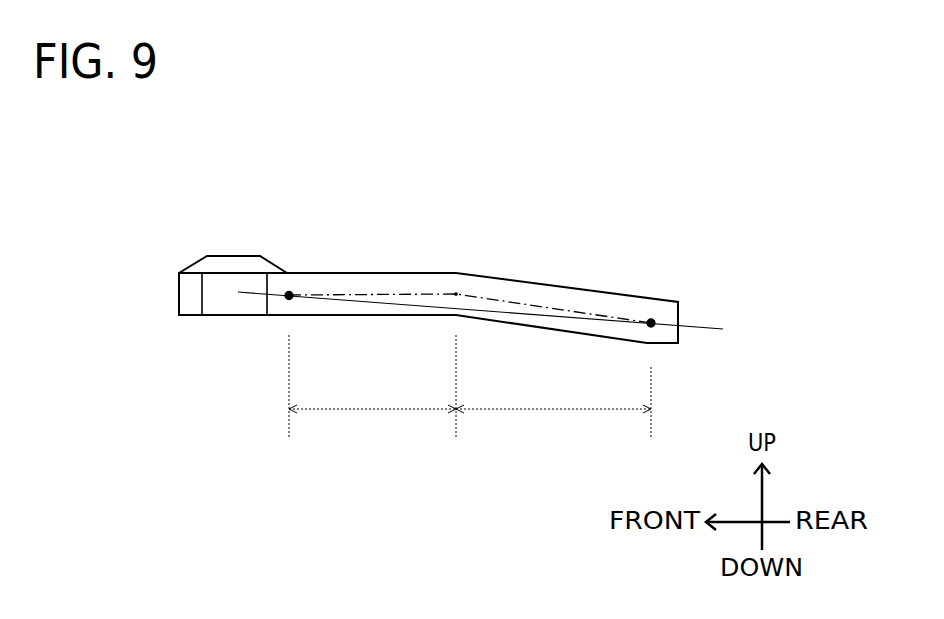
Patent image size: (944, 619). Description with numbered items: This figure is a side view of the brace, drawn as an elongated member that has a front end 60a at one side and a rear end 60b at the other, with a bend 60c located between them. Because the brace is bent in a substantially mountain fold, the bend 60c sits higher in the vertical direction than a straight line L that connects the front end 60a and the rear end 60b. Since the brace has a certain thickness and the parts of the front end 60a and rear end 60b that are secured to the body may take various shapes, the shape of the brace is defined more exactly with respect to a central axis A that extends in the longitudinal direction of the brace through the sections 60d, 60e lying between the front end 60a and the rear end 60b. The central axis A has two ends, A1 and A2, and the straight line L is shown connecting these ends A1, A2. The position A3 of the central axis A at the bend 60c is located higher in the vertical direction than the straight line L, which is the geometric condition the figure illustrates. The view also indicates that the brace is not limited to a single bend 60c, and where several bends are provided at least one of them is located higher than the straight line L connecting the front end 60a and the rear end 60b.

The front end 60a is at (193, 295).
The rear end 60b is at (665, 322).
The bend 60c is at (455, 296).
The section 60d is at (372, 386).
The section 60e is at (553, 402).
The central axis A is at (622, 320).
The end of the central axis A1 is at (289, 294).
The end of the central axis A2 is at (652, 321).
The position of the central axis at the bend A3 is at (455, 294).
The straight line L is at (712, 329).